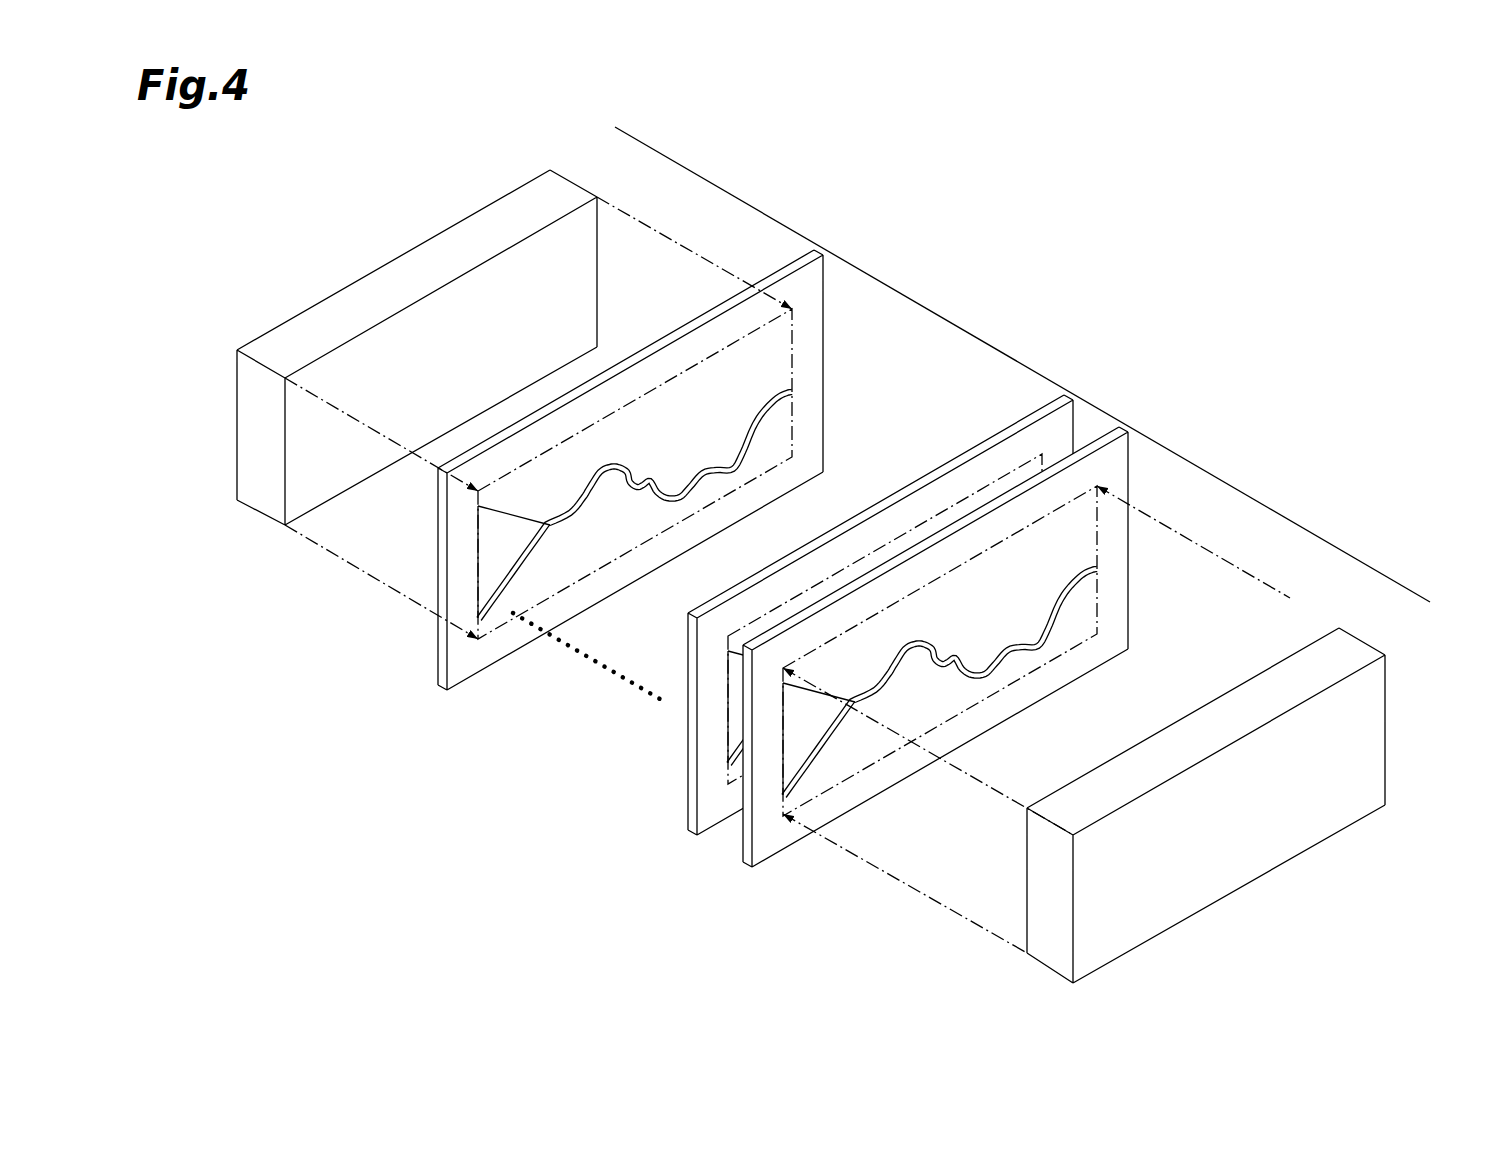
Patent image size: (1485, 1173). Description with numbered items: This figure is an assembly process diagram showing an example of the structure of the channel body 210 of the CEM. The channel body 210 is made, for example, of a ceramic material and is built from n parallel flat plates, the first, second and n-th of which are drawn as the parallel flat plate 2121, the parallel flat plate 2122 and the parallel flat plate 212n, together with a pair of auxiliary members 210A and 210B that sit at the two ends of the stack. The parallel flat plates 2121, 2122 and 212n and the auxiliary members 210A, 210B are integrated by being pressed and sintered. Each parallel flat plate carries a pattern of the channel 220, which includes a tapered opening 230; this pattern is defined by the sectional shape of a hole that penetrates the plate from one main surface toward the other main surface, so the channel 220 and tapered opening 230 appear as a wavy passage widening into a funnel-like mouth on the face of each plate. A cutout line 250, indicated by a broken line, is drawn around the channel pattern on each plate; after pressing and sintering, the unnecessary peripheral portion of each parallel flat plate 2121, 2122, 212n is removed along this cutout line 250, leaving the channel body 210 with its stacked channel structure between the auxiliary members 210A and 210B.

The channel body 210 is at (1180, 360).
The auxiliary member 210A is at (353, 302).
The auxiliary member 210B is at (1205, 855).
The parallel flat plate 212n is at (443, 690).
The parallel flat plate 2122 is at (827, 654).
The parallel flat plate 2121 is at (986, 697).
The channel 220 is at (955, 653).
The tapered opening 230 is at (802, 728).
The cutout line 250 is at (1097, 585).